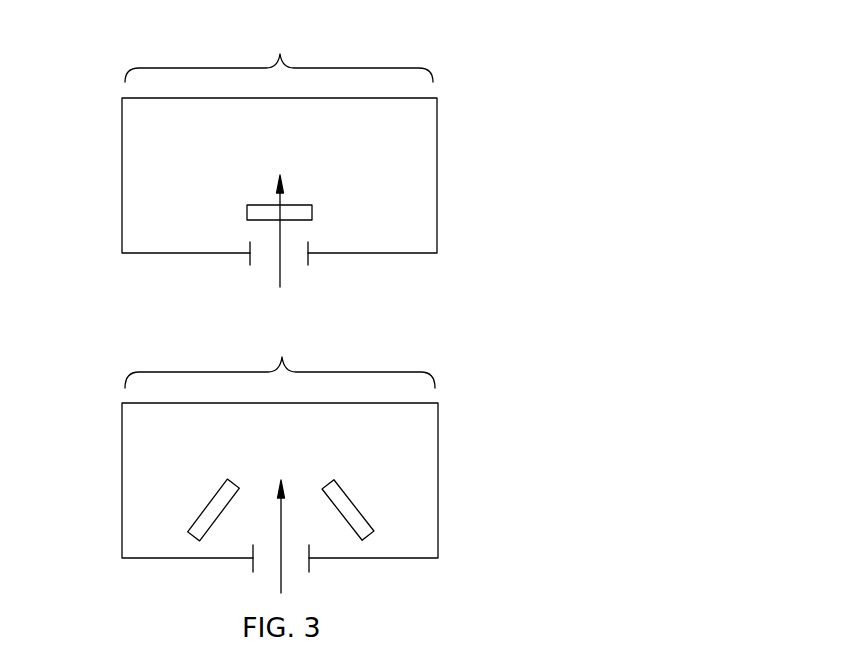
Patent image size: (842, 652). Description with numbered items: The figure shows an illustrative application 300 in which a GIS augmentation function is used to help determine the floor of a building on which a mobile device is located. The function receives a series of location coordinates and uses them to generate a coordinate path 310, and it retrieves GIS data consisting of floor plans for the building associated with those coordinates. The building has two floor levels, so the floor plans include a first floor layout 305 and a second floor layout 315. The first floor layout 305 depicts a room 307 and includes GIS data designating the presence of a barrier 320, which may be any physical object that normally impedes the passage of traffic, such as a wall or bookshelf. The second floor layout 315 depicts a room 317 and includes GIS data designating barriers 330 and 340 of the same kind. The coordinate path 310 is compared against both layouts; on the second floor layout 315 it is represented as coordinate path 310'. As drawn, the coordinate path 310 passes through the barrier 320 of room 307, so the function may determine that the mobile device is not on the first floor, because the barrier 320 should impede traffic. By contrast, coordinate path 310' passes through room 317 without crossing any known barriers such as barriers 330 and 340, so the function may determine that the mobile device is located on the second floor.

The application 300 is at (553, 48).
The first floor layout 305 is at (279, 53).
The room 307 is at (122, 137).
The coordinate path 310 is at (336, 234).
The barrier 320 is at (312, 212).
The second floor layout 315 is at (280, 359).
The room 317 is at (122, 434).
The coordinate path 310' is at (340, 539).
The barrier 330 is at (200, 511).
The barrier 340 is at (365, 518).